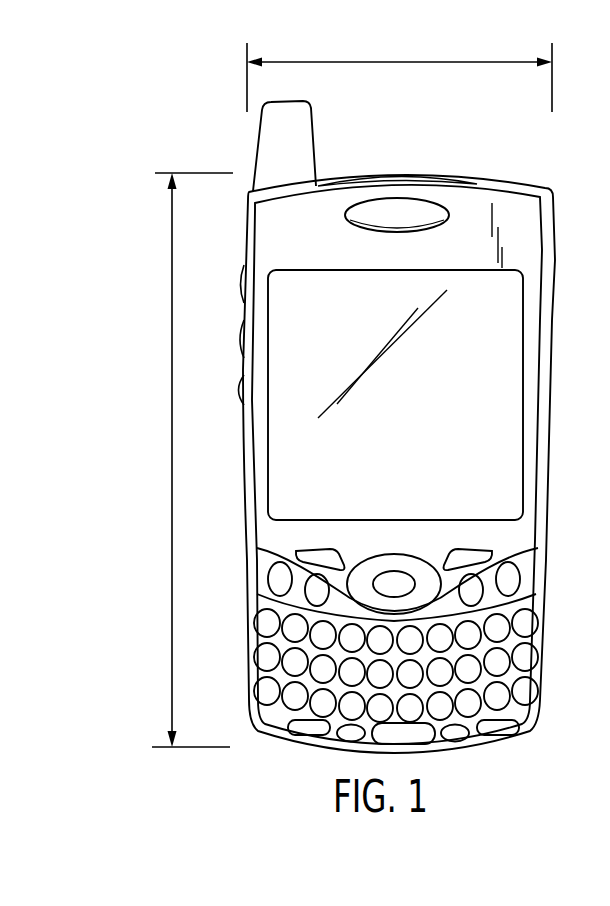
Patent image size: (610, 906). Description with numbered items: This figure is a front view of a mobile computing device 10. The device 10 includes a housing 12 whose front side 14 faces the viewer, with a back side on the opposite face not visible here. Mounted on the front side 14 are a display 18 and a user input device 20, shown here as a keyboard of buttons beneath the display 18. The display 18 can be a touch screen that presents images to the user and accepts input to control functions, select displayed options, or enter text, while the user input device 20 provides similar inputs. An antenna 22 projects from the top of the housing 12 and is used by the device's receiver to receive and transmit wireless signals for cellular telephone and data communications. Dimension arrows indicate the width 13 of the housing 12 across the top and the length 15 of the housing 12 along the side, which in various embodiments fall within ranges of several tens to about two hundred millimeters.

The device 10 is at (446, 136).
The housing 12 is at (513, 216).
The width 13 is at (413, 61).
The front side 14 is at (308, 240).
The length 15 is at (172, 441).
The display 18 is at (505, 342).
The user input device 20 is at (526, 624).
The antenna 22 is at (305, 155).